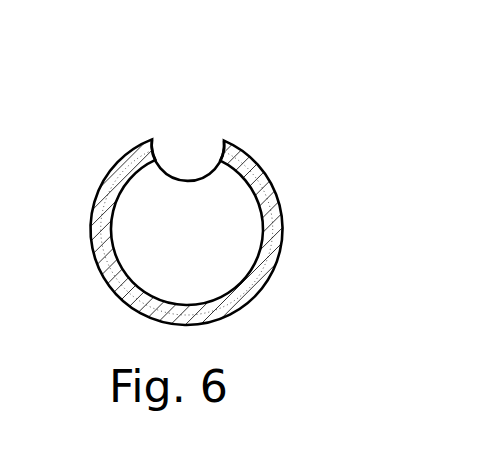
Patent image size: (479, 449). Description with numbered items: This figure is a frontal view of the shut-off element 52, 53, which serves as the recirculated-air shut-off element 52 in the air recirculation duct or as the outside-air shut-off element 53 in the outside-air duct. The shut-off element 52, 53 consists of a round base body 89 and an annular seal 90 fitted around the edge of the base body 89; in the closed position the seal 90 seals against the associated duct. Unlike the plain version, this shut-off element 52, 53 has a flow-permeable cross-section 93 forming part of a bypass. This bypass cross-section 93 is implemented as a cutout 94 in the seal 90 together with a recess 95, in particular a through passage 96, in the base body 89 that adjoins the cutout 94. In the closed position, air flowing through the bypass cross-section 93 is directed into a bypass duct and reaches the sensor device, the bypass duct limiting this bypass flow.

The recirculated-air shut-off element 52 is at (262, 125).
The outside-air shut-off element 53 is at (239, 205).
The base body 89 is at (138, 232).
The seal 90 is at (112, 297).
The flow-permeable cross-section 93 is at (187, 148).
The cutout 94 is at (212, 155).
The recess 95 is at (185, 172).
The through passage 96 is at (188, 160).